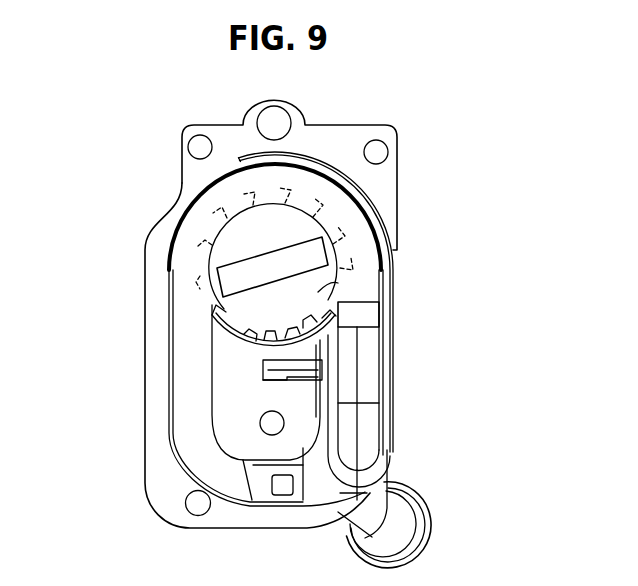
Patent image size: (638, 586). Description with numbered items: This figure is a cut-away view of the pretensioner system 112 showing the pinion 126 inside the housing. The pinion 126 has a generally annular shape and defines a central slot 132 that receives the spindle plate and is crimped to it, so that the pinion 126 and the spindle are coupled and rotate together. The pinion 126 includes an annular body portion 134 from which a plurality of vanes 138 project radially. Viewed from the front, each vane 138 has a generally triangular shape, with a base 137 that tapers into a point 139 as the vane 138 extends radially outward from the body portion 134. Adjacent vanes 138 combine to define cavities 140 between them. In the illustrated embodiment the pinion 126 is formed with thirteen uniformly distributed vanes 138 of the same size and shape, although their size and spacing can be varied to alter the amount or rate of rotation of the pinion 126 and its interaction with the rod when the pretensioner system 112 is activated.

The pretensioner system 112 is at (423, 143).
The pinion 126 is at (237, 240).
The central slot 132 is at (233, 278).
The annular body portion 134 is at (323, 288).
The base 137 is at (340, 298).
The vanes 138 is at (330, 318).
The point 139 is at (318, 332).
The cavities 140 is at (212, 318).